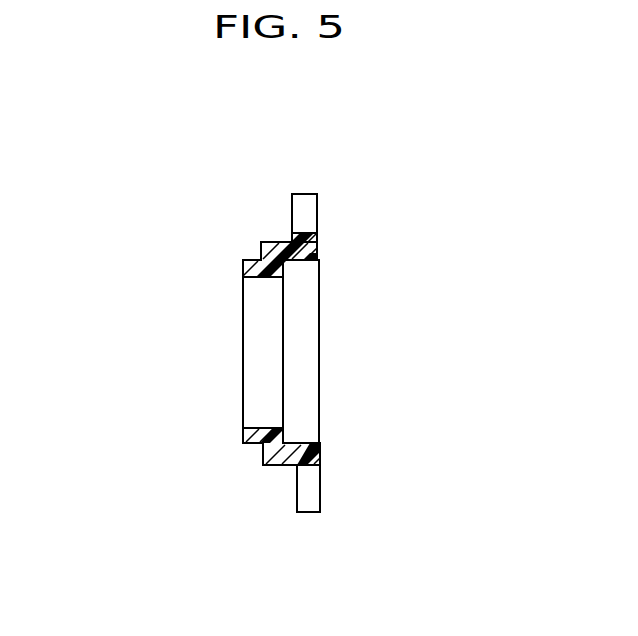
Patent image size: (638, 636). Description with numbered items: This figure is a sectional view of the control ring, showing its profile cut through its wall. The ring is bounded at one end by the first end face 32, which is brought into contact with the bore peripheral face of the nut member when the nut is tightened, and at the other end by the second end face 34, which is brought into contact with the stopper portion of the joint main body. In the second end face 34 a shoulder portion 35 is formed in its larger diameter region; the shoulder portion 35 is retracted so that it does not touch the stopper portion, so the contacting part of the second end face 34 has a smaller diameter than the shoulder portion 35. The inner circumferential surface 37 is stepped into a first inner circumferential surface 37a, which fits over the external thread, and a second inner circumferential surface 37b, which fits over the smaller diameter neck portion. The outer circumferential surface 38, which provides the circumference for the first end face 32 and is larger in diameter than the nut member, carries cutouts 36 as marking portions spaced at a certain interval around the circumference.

The first end face 32 is at (320, 245).
The second end face 34 is at (242, 270).
The shoulder portion 35 is at (261, 250).
The cutouts 36 is at (313, 233).
The inner circumferential surface 37 is at (206, 352).
The first inner circumferential surface 37a is at (302, 260).
The second inner circumferential surface 37b is at (268, 278).
The outer circumferential surface 38 is at (305, 194).